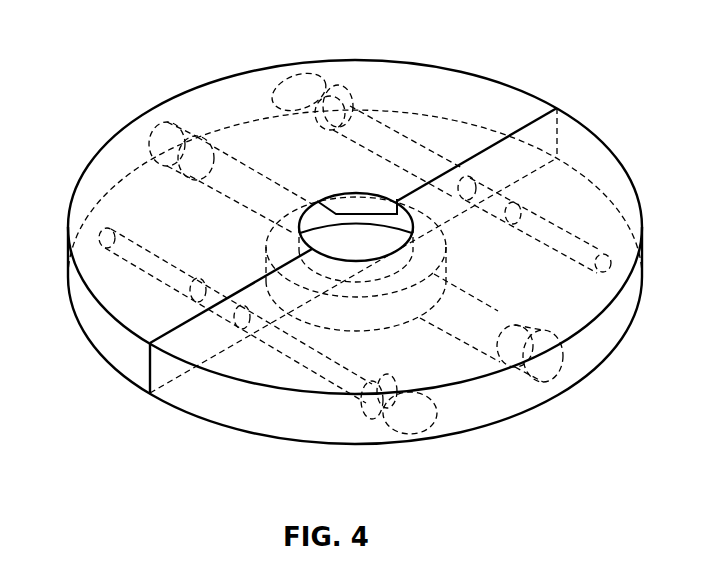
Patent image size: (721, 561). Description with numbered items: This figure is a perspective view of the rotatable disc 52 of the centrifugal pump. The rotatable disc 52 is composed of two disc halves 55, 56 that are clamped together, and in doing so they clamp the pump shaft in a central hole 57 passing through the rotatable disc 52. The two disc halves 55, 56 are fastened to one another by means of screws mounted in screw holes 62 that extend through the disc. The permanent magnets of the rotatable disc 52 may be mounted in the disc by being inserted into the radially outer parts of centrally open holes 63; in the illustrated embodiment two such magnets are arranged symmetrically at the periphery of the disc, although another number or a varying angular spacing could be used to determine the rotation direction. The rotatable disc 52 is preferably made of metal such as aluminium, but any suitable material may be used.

The rotatable disc 52 is at (100, 396).
The disc half 55 is at (463, 88).
The disc half 56 is at (577, 197).
The central hole 57 is at (357, 238).
The screw hole 62 is at (437, 167).
The centrally open hole 63 is at (185, 145).